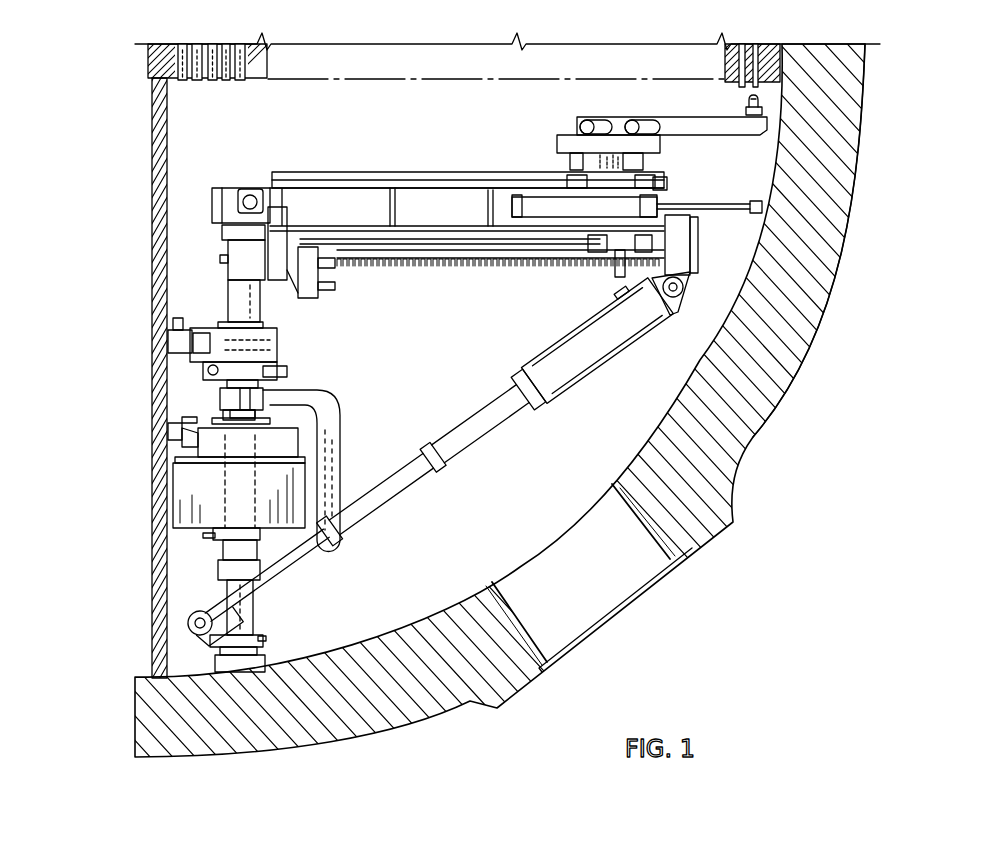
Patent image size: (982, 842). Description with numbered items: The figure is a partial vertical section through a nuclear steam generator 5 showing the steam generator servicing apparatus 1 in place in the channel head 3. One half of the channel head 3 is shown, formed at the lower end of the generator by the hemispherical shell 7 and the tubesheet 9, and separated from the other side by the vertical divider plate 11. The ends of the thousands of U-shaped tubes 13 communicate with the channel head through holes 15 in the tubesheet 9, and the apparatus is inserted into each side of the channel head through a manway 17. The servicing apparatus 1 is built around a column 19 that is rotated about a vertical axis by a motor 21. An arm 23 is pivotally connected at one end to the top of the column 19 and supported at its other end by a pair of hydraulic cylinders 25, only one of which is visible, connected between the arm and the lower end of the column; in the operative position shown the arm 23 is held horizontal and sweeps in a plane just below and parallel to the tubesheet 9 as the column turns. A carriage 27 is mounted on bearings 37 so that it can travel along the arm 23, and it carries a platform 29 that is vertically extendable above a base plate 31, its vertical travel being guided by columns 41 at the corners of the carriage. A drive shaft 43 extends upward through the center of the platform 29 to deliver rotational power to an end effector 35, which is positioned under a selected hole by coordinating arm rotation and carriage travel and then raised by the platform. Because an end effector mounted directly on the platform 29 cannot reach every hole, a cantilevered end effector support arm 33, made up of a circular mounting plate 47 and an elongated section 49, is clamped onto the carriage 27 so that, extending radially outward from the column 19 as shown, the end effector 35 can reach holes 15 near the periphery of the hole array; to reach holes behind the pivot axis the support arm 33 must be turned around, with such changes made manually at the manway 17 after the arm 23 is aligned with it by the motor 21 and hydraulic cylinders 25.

The steam generator servicing apparatus 1 is at (343, 390).
The channel head 3 is at (625, 425).
The nuclear steam generator 5 is at (950, 208).
The hemispherical shell 7 is at (840, 291).
The tubesheet 9 is at (400, 80).
The vertical divider plate 11 is at (152, 243).
The U-shaped tubes 13 is at (760, 46).
The holes 15 is at (253, 78).
The manway 17 is at (590, 600).
The column 19 is at (263, 313).
The motor 21 is at (150, 538).
The arm 23 is at (343, 172).
The hydraulic cylinders 25 is at (574, 381).
The carriage 27 is at (560, 257).
The platform 29 is at (560, 142).
The base plate 31 is at (568, 167).
The end effector support arm 33 is at (706, 137).
The end effector 35 is at (746, 110).
The bearings 37 is at (675, 196).
The columns 41 is at (565, 165).
The drive shaft 43 is at (627, 163).
The circular mounting plate 47 is at (562, 136).
The elongated section 49 is at (673, 117).